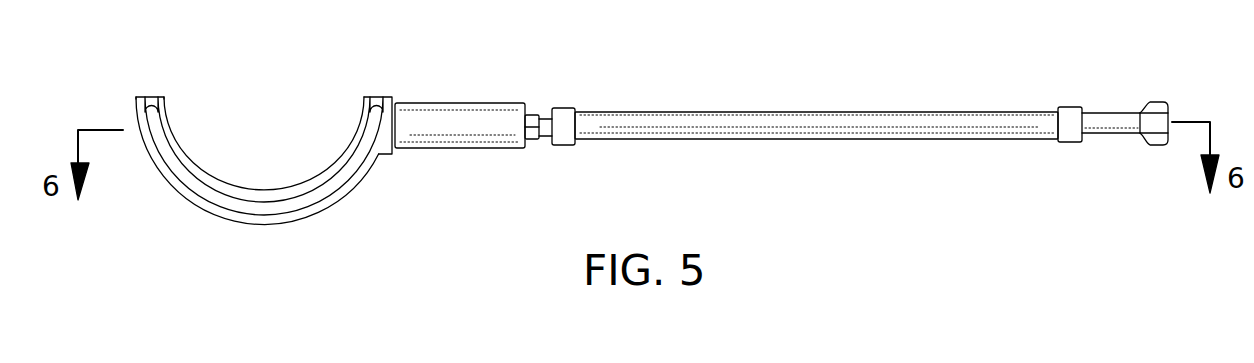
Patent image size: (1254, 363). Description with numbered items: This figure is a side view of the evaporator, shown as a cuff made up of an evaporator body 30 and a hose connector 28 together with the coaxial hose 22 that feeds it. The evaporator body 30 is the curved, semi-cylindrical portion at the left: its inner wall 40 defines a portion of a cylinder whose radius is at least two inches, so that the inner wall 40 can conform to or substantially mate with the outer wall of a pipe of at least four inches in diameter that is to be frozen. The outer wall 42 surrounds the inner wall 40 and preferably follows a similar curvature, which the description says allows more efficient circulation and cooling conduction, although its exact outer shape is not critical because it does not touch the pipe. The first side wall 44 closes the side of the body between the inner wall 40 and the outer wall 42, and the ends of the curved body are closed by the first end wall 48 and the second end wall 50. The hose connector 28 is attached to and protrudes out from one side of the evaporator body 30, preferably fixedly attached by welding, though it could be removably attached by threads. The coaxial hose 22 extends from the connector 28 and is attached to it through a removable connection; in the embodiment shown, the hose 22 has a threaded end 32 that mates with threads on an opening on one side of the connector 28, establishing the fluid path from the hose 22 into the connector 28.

The coaxial hose 22 is at (633, 111).
The hose connector 28 is at (462, 103).
The evaporator body 30 is at (284, 143).
The threaded end 32 is at (532, 115).
The inner wall 40 is at (333, 172).
The outer wall 42 is at (329, 212).
The first side wall 44 is at (216, 202).
The first end wall 48 is at (382, 96).
The second end wall 50 is at (152, 98).